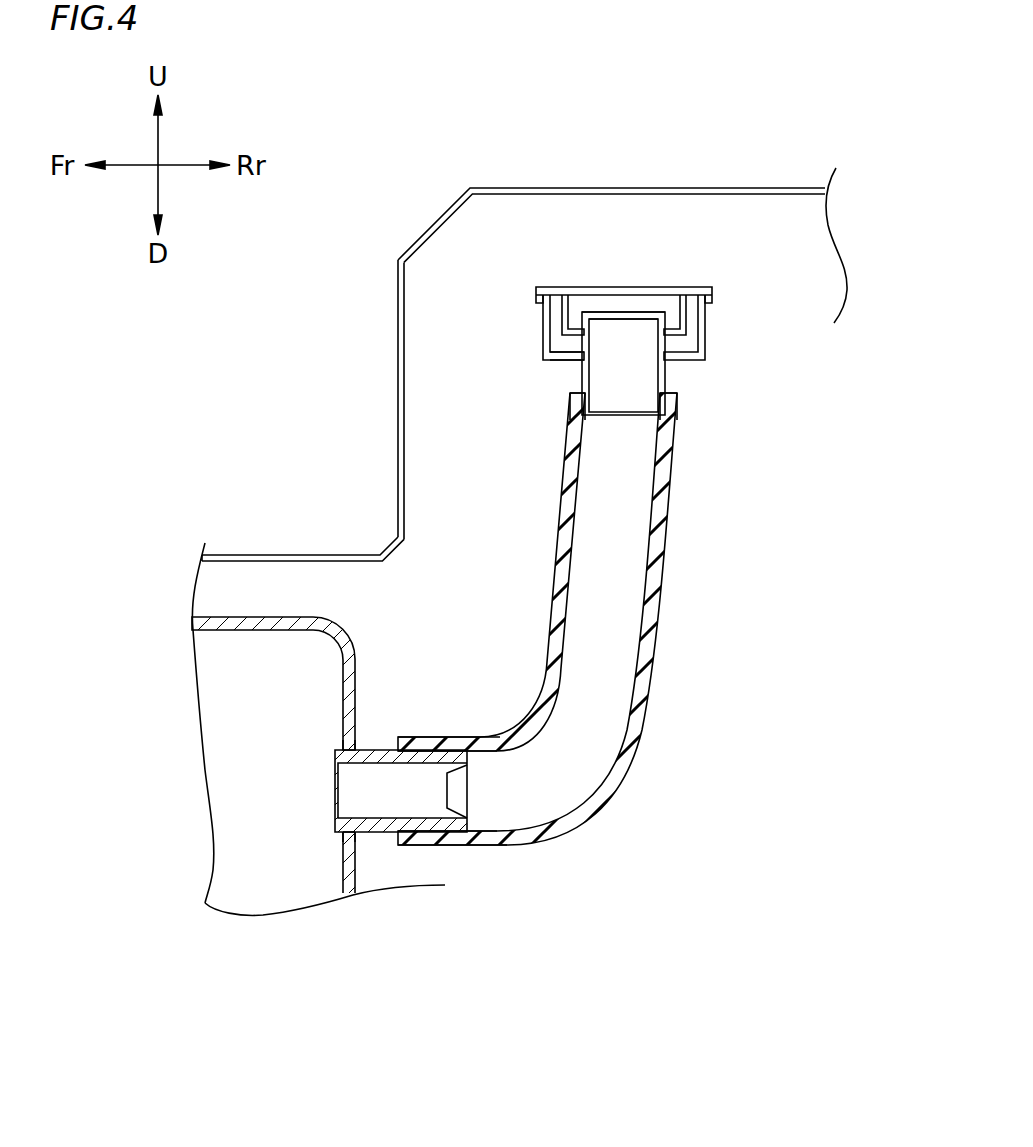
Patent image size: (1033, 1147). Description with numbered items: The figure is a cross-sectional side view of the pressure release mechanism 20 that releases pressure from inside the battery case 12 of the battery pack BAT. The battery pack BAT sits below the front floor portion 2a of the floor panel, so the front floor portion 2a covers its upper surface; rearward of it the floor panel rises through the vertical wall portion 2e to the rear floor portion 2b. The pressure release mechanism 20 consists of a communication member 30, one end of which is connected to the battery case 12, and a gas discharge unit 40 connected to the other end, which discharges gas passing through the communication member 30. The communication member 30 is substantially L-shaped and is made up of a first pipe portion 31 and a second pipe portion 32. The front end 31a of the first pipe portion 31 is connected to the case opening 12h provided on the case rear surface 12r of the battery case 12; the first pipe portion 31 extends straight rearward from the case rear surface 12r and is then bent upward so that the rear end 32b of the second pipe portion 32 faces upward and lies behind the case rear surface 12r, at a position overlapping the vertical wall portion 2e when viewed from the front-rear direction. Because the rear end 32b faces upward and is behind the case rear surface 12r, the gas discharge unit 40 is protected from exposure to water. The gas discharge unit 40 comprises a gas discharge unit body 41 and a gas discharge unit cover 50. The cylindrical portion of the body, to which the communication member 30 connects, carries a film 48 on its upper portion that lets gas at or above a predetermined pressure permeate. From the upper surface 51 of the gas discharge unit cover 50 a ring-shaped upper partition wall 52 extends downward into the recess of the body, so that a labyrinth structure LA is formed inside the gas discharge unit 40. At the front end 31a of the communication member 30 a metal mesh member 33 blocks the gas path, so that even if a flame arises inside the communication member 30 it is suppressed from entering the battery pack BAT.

The front floor portion 2a is at (323, 554).
The rear floor portion 2b is at (725, 187).
The vertical wall portion 2e is at (404, 372).
The battery case 12 is at (317, 685).
The case rear surface 12r is at (357, 695).
The case opening 12h is at (360, 758).
The battery pack BAT is at (317, 685).
The pressure release mechanism 20 is at (617, 268).
The communication member 30 is at (560, 679).
The first pipe portion 31 is at (428, 807).
The front end 31a is at (382, 830).
The second pipe portion 32 is at (592, 619).
The rear end 32b is at (677, 434).
The metal mesh member 33 is at (450, 788).
The gas discharge unit 40 is at (632, 256).
The gas discharge unit body 41 is at (707, 338).
The film 48 is at (633, 310).
The gas discharge unit cover 50 is at (671, 287).
The upper surface 51 is at (562, 287).
The upper partition wall 52 is at (562, 323).
The labyrinth structure LA is at (557, 352).